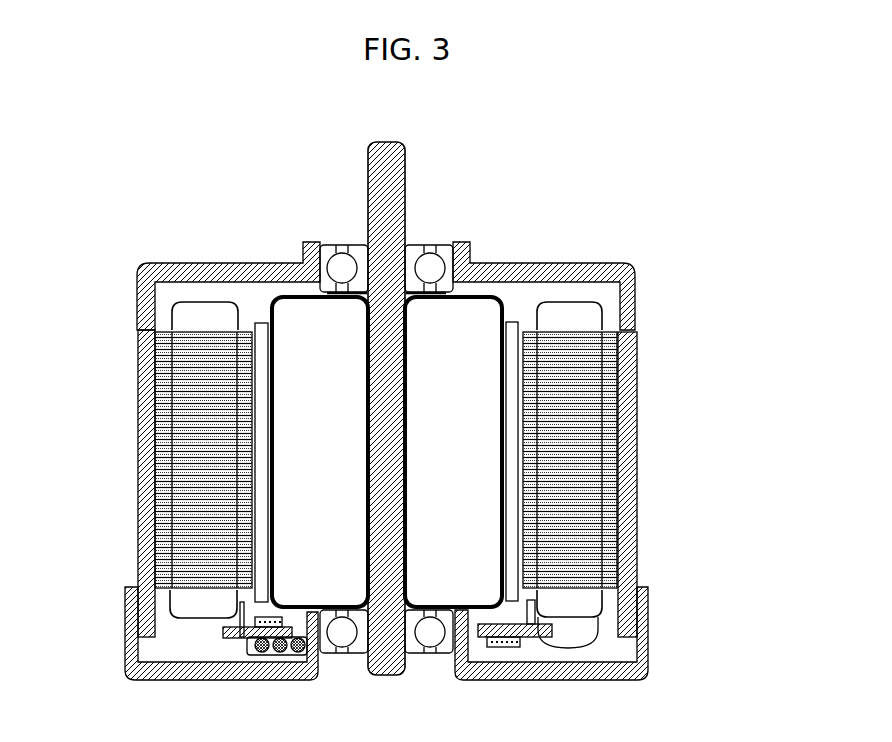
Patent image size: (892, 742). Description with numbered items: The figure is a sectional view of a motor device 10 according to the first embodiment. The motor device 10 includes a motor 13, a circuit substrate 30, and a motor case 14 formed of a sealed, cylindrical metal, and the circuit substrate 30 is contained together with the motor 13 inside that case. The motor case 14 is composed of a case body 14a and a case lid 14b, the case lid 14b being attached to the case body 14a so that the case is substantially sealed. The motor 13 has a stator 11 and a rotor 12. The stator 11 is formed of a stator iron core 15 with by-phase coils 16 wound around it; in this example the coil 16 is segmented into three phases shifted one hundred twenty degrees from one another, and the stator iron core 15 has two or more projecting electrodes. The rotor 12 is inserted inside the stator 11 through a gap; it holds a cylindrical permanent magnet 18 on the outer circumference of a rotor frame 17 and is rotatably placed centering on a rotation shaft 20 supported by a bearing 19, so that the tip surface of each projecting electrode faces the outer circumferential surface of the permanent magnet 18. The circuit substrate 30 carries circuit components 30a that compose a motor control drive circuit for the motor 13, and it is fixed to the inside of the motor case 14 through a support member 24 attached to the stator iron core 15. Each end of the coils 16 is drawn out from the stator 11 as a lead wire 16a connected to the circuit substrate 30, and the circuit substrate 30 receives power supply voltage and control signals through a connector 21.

The motor device 10 is at (150, 263).
The stator 11 is at (592, 302).
The rotor 12 is at (498, 297).
The motor 13 is at (750, 206).
The motor case 14 is at (775, 497).
The case body 14a is at (635, 537).
The case lid 14b is at (648, 602).
The stator iron core 15 is at (613, 412).
The coil 16 is at (580, 313).
The lead wire 16a is at (593, 642).
The rotor frame 17 is at (313, 317).
The permanent magnet 18 is at (267, 325).
The bearing 19 is at (352, 253).
The rotation shaft 20 is at (385, 172).
The connector 21 is at (247, 653).
The support member 24 is at (238, 622).
The circuit substrate 30 is at (227, 627).
The circuit component 30a is at (268, 650).